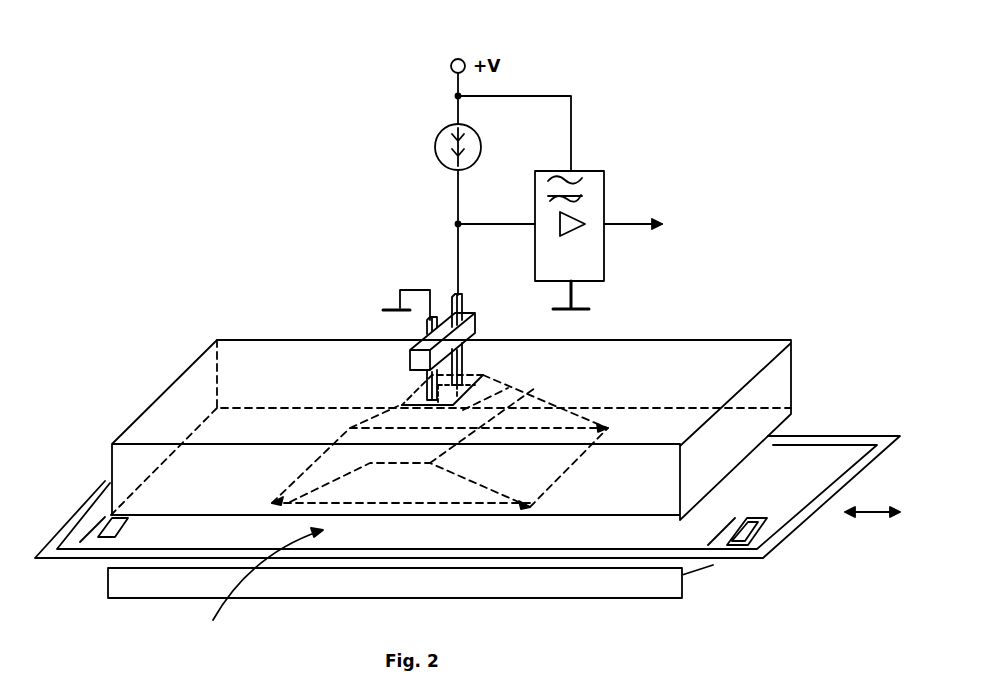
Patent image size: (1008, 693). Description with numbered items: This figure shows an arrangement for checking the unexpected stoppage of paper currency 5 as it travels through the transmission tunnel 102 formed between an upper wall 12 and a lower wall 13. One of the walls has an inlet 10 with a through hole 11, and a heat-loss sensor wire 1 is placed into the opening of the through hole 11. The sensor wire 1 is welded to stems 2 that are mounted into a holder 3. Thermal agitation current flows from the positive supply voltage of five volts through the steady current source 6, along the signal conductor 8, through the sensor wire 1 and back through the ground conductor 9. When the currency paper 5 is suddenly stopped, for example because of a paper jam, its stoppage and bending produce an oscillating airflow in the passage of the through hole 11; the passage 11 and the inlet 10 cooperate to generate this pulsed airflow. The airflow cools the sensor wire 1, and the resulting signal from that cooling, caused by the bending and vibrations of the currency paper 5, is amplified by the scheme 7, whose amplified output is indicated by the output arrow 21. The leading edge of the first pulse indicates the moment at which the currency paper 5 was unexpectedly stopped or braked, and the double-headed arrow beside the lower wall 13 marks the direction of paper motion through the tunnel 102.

The sensor wire 1 is at (467, 403).
The stems 2 is at (425, 332).
The holder 3 is at (470, 323).
The currency paper 5 is at (785, 518).
The steady current source 6 is at (446, 167).
The scheme 7 is at (535, 195).
The signal conductor 8 is at (461, 266).
The ground conductor 9 is at (412, 289).
The inlet 10 is at (438, 490).
The through hole 11 is at (493, 387).
The upper wall 12 is at (772, 386).
The lower wall 13 is at (688, 582).
The output signal 21 is at (635, 222).
The transmission tunnel 102 is at (252, 586).